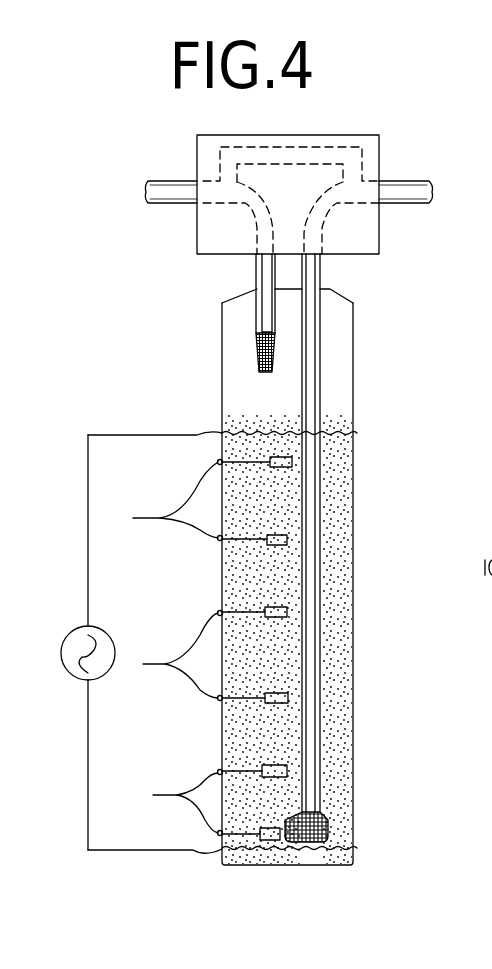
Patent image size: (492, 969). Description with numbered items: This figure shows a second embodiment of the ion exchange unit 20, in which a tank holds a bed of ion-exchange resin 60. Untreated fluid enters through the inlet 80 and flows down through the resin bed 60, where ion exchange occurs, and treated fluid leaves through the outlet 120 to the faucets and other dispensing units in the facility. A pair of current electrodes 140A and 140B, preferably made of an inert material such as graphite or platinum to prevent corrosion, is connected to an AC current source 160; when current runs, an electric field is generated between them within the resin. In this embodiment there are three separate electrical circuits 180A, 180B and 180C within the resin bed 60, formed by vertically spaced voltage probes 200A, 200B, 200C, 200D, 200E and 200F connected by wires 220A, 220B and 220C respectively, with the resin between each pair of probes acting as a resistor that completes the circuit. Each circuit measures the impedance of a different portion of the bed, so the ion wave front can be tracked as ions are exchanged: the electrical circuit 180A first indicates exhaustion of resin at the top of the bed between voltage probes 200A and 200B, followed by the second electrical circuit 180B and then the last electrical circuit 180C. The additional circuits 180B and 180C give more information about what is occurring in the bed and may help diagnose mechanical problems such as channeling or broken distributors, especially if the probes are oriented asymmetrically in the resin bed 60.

The ion exchange unit 20 is at (362, 397).
The ion-exchange resin 60 is at (336, 468).
The inlet 80 is at (131, 192).
The outlet 120 is at (476, 192).
The current electrode 140A is at (353, 436).
The current electrode 140B is at (353, 852).
The AC current source 160 is at (104, 673).
The electrical circuit 180A is at (257, 486).
The electrical circuit 180B is at (267, 653).
The electrical circuit 180C is at (277, 803).
The voltage probe 200A is at (292, 462).
The voltage probe 200B is at (287, 543).
The voltage probe 200C is at (275, 605).
The voltage probe 200D is at (288, 702).
The voltage probe 200E is at (287, 771).
The voltage probe 200F is at (272, 838).
The wire 220A is at (178, 490).
The wire 220B is at (186, 643).
The wire 220C is at (196, 784).